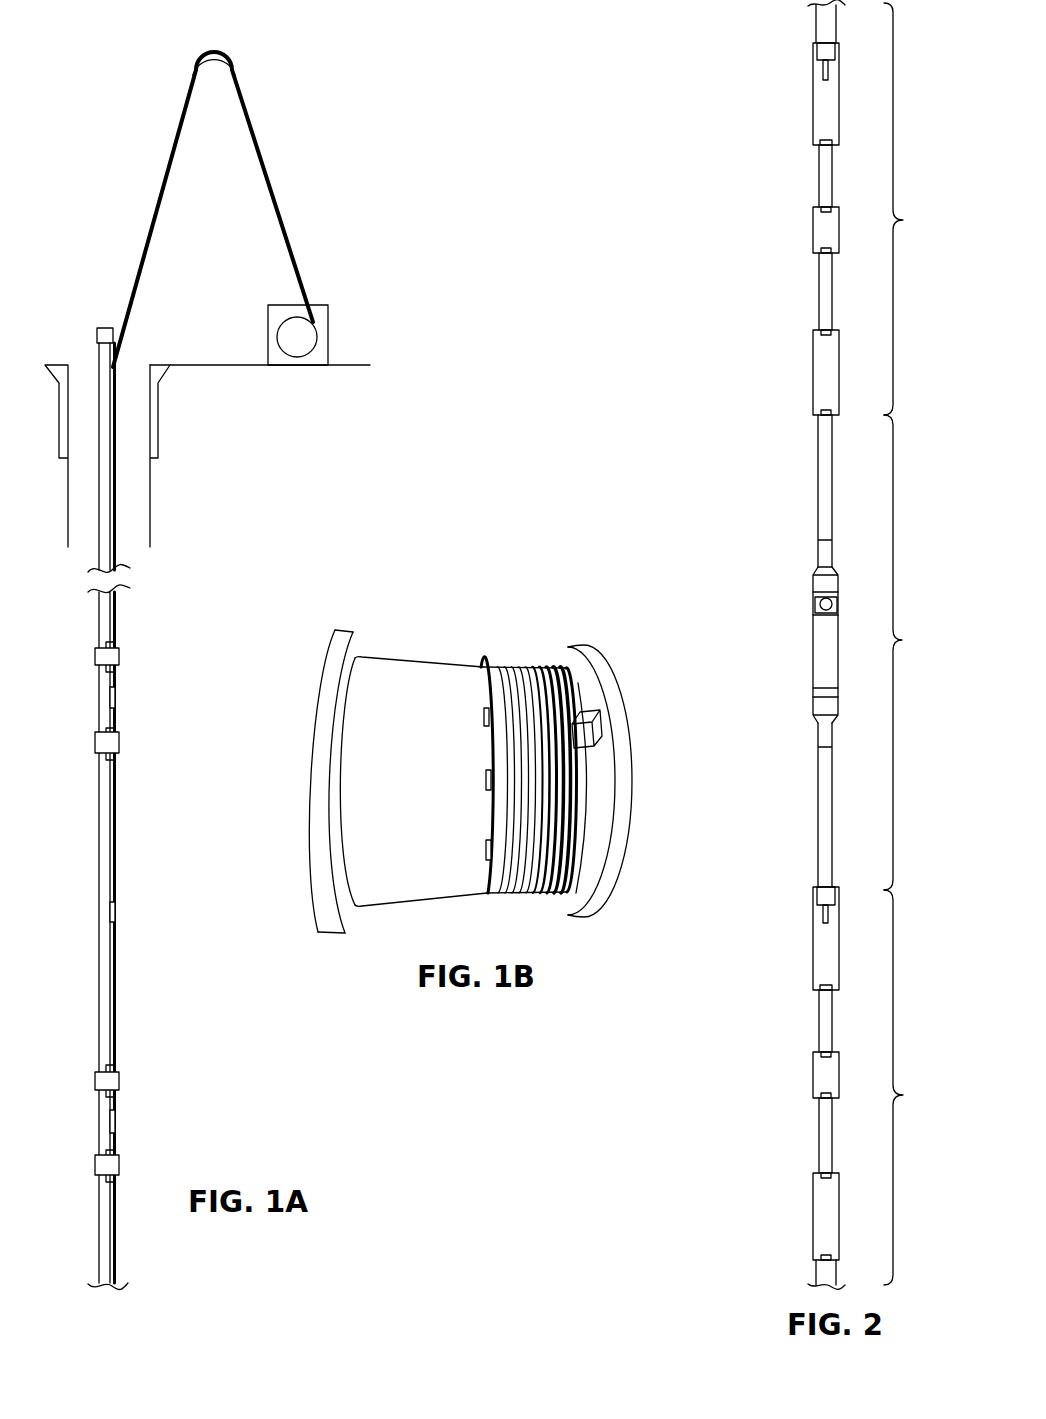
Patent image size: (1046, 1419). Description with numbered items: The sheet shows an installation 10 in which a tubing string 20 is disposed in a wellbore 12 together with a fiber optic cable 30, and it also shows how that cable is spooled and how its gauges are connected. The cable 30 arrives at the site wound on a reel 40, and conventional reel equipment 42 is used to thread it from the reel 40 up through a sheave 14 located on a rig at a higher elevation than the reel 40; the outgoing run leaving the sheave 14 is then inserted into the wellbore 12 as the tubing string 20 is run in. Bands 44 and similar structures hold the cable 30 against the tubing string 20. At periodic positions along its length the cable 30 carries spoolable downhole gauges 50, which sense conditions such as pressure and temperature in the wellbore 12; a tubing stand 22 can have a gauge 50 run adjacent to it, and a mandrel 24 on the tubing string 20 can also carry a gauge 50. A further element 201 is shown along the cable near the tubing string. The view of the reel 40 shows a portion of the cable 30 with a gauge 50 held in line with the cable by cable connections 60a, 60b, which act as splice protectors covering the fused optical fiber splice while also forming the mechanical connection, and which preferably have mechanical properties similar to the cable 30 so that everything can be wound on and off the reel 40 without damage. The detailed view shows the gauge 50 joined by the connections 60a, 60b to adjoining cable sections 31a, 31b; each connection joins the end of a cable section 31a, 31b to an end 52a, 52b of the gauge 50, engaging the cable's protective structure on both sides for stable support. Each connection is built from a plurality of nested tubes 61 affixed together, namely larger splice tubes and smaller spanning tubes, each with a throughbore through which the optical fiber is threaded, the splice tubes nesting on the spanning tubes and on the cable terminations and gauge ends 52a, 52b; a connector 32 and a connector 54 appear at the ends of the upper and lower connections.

In FIG. 1A, the installation 10 is at (103, 162).
In FIG. 1A, the wellbore 12 is at (73, 372).
In FIG. 1A, the sheave 14 is at (227, 49).
In FIG. 1A, the tubing string 20 is at (106, 320).
In FIG. 1A, the tubing stand 22 is at (99, 620).
In FIG. 1A, the mandrel 24 is at (99, 705).
In FIG. 1A, the fiber optic cable 30 is at (265, 163).
In FIG. 1B, the fiber optic cable 30 is at (508, 668).
In FIG. 2, the fiber optic cable 30 is at (852, 22).
In FIG. 2, the cable section 31a is at (816, 23).
In FIG. 2, the cable section 31b is at (816, 1278).
In FIG. 2, the cable connector 32 is at (797, 61).
In FIG. 1A, the reel 40 is at (318, 337).
In FIG. 1B, the reel 40 is at (572, 624).
In FIG. 1A, the reel equipment 42 is at (326, 305).
In FIG. 1A, the bands 44 is at (120, 656).
In FIG. 1A, the spoolable gauge 50 is at (116, 697).
In FIG. 1B, the spoolable gauge 50 is at (486, 776).
In FIG. 2, the spoolable gauge 50 is at (846, 652).
In FIG. 2, the gauge end 52a is at (818, 425).
In FIG. 2, the gauge end 52b is at (818, 872).
In FIG. 2, the tool connector 54 is at (797, 907).
In FIG. 1B, the cable connection 60a is at (486, 845).
In FIG. 2, the cable connection 60a is at (852, 209).
In FIG. 1B, the cable connection 60b is at (481, 717).
In FIG. 2, the cable connection 60b is at (852, 1086).
In FIG. 2, the nested tubes 61 is at (871, 106).
In FIG. 1A, the sensor on cable 201 is at (116, 910).